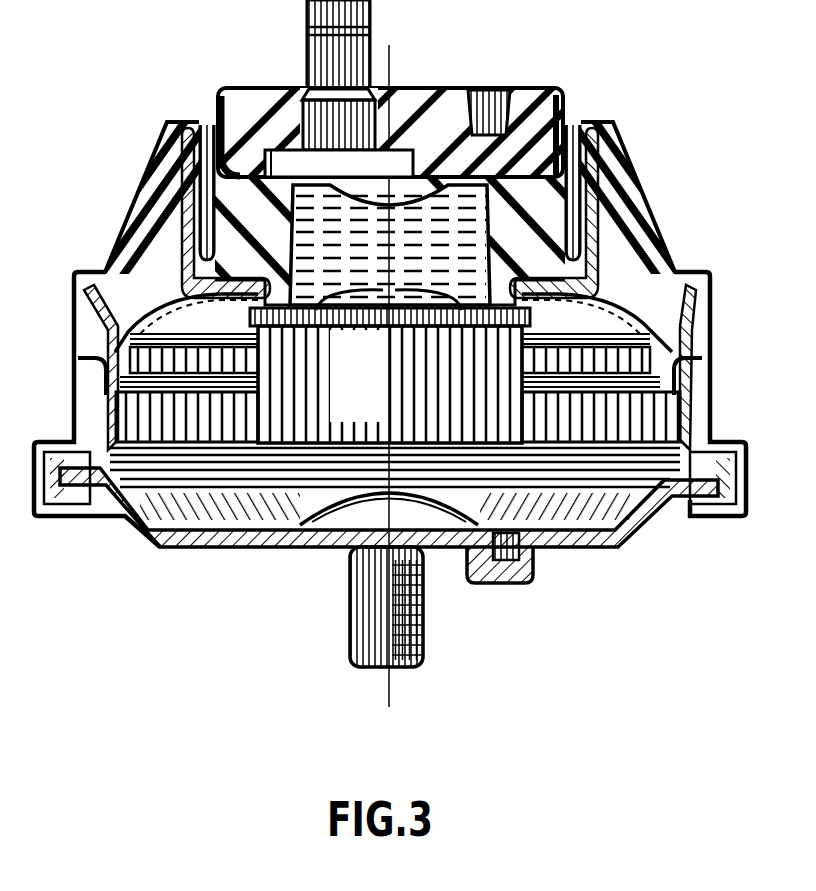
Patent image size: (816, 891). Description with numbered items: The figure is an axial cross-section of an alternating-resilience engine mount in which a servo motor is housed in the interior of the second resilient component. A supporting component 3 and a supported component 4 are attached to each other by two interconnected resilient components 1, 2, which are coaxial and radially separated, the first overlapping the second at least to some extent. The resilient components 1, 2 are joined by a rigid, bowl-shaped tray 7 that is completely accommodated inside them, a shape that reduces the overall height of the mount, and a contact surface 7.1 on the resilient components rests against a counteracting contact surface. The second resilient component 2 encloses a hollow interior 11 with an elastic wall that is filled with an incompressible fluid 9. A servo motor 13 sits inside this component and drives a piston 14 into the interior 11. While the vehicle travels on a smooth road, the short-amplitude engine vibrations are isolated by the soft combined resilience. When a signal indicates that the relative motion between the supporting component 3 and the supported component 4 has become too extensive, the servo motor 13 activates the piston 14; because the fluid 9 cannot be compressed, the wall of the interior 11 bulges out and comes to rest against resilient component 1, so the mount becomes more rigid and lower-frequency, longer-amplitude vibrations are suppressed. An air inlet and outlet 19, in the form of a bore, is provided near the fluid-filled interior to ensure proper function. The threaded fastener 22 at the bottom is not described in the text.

The resilient component 1 is at (648, 231).
The resilient component 2 is at (553, 128).
The supporting component 3 is at (435, 103).
The supported component 4 is at (575, 548).
The tray 7 is at (598, 286).
The contact surface 7.1 is at (177, 213).
The fluid 9 is at (295, 232).
The hollow interior 11 is at (462, 258).
The servo motor 13 is at (368, 413).
The piston 14 is at (362, 300).
The air inlet and outlet 19 is at (165, 548).
The lower fastening bolt 22 is at (389, 688).